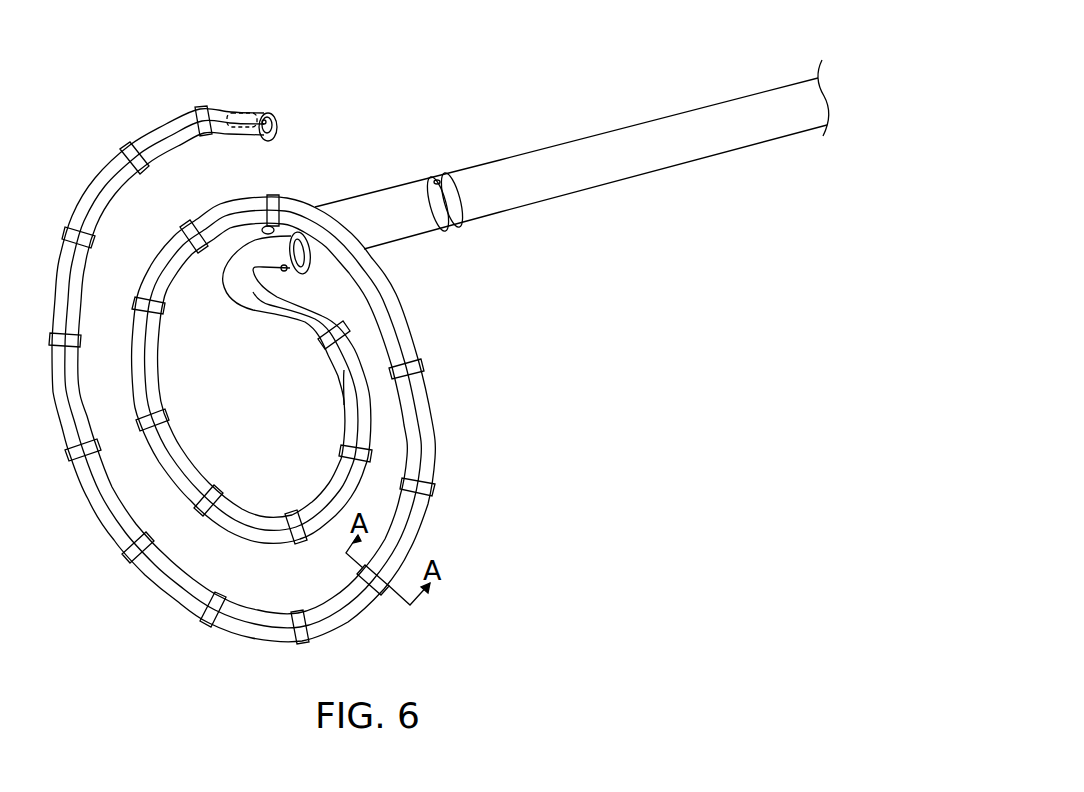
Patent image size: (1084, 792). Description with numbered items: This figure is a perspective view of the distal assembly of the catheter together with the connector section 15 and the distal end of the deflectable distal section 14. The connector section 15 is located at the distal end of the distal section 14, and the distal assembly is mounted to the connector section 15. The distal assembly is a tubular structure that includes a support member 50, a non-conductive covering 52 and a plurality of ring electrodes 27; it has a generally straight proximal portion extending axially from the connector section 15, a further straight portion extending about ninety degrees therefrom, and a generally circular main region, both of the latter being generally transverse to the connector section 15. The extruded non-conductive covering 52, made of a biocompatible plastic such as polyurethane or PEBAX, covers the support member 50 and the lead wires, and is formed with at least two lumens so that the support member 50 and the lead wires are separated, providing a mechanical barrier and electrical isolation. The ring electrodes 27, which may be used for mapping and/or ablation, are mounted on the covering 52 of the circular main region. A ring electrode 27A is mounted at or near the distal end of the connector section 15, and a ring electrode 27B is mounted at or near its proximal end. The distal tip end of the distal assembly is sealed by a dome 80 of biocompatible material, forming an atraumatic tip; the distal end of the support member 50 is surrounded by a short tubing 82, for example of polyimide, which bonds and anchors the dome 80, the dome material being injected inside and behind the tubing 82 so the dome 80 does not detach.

The deflectable distal section 14 is at (604, 130).
The connector section 15 is at (341, 210).
The ring electrodes 27 is at (420, 363).
The ring electrode 27A is at (305, 265).
The ring electrode 27B is at (446, 186).
The support member 50 is at (352, 417).
The non-conductive covering 52 is at (342, 381).
The dome 80 is at (283, 124).
The short tubing 82 is at (238, 112).